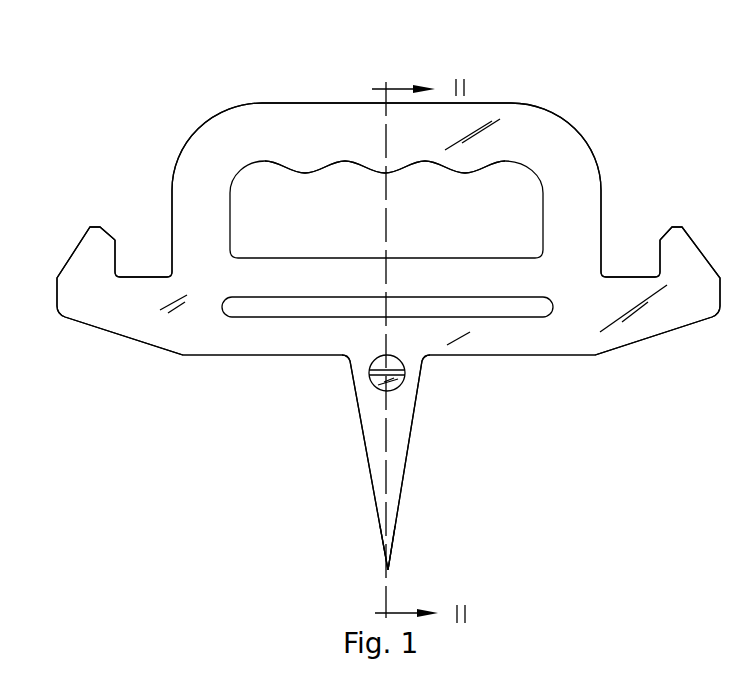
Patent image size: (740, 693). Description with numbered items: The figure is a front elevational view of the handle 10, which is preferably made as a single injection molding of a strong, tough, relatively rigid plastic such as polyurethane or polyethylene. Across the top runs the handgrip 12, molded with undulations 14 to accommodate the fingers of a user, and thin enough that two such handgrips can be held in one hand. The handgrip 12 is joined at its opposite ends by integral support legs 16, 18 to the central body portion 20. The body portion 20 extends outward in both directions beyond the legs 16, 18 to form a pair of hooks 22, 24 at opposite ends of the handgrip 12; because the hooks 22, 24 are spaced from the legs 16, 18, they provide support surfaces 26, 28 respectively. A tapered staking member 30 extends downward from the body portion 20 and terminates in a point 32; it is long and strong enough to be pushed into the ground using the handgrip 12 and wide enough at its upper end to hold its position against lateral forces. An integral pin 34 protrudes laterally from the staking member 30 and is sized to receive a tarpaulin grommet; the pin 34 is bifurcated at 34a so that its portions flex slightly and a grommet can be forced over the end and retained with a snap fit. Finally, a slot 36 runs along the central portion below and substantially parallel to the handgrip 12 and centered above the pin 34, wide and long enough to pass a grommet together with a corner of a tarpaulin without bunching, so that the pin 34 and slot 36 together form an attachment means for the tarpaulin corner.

The handle 10 is at (538, 90).
The handgrip 12 is at (352, 103).
The undulations 14 is at (386, 209).
The support leg 16 is at (185, 152).
The support leg 18 is at (597, 172).
The central body portion 20 is at (385, 201).
The hook 22 is at (78, 246).
The hook 24 is at (694, 243).
The support surface 26 is at (143, 277).
The support surface 28 is at (627, 277).
The staking member 30 is at (407, 473).
The point 32 is at (392, 572).
The pin 34 is at (403, 388).
The bifurcation 34a is at (372, 383).
The slot 36 is at (298, 317).